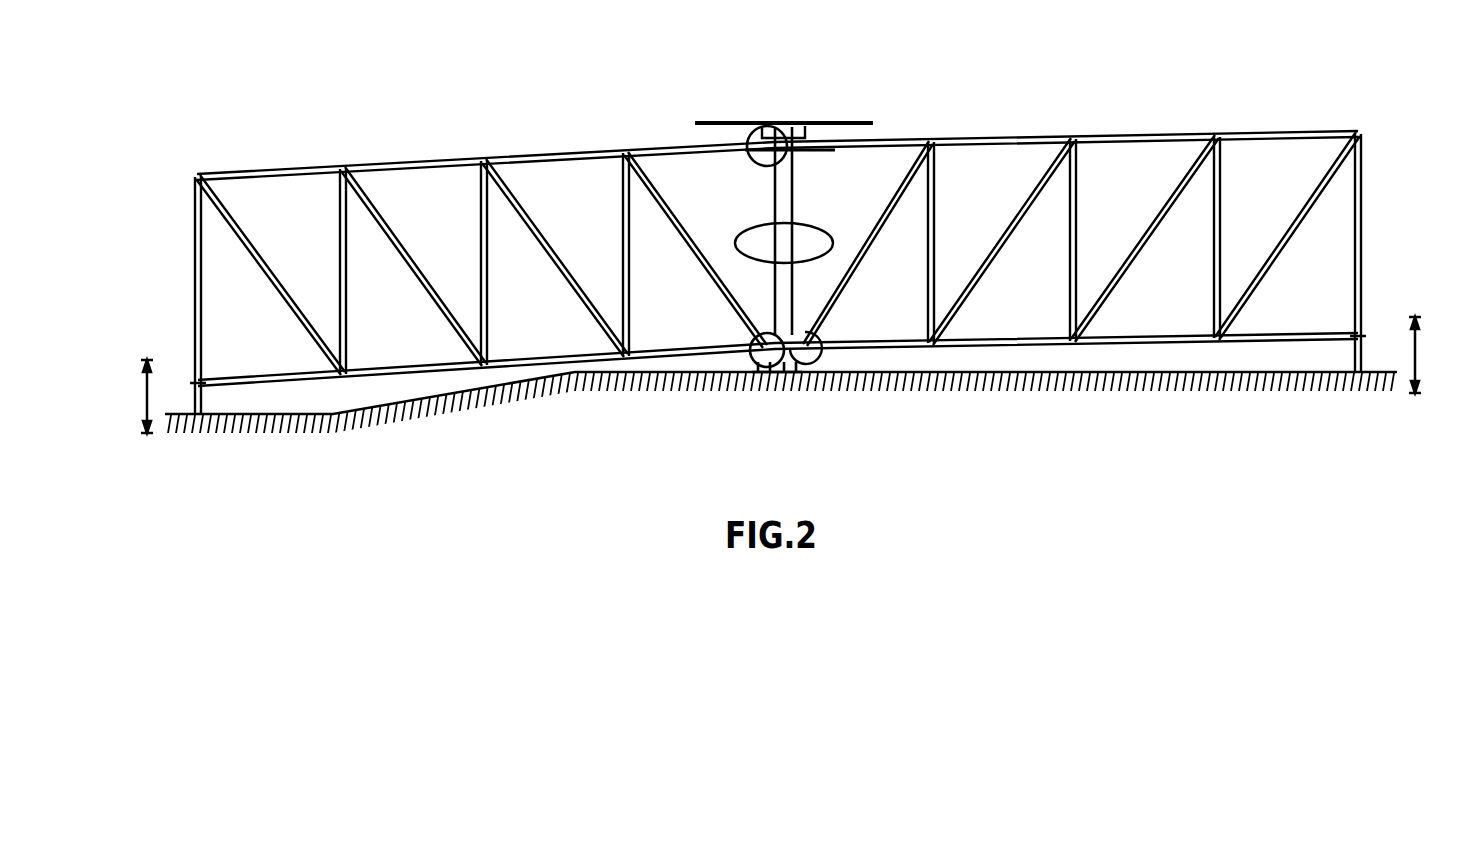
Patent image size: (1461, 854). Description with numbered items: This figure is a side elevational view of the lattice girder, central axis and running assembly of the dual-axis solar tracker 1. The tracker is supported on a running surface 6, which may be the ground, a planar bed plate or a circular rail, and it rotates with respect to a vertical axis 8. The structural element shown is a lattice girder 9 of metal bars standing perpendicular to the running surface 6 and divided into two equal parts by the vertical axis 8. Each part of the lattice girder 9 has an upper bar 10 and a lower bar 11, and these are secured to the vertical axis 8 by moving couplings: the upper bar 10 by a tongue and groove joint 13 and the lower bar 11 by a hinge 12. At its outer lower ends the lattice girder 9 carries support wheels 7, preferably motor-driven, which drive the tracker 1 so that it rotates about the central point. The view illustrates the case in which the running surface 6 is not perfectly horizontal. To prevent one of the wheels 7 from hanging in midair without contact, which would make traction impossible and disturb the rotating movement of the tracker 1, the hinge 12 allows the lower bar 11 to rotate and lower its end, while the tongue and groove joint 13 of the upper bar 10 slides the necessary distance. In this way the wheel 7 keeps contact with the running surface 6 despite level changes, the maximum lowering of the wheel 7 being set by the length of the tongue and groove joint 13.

The dual-axis solar tracker 1 is at (200, 170).
The running surface 6 is at (255, 443).
The support wheels 7 is at (197, 395).
The vertical axis 8 is at (807, 148).
The lattice girder 9 is at (195, 257).
The upper bar 10 is at (460, 157).
The lower bar 11 is at (362, 382).
The hinge 12 is at (775, 370).
The tongue and groove joint 13 is at (788, 133).